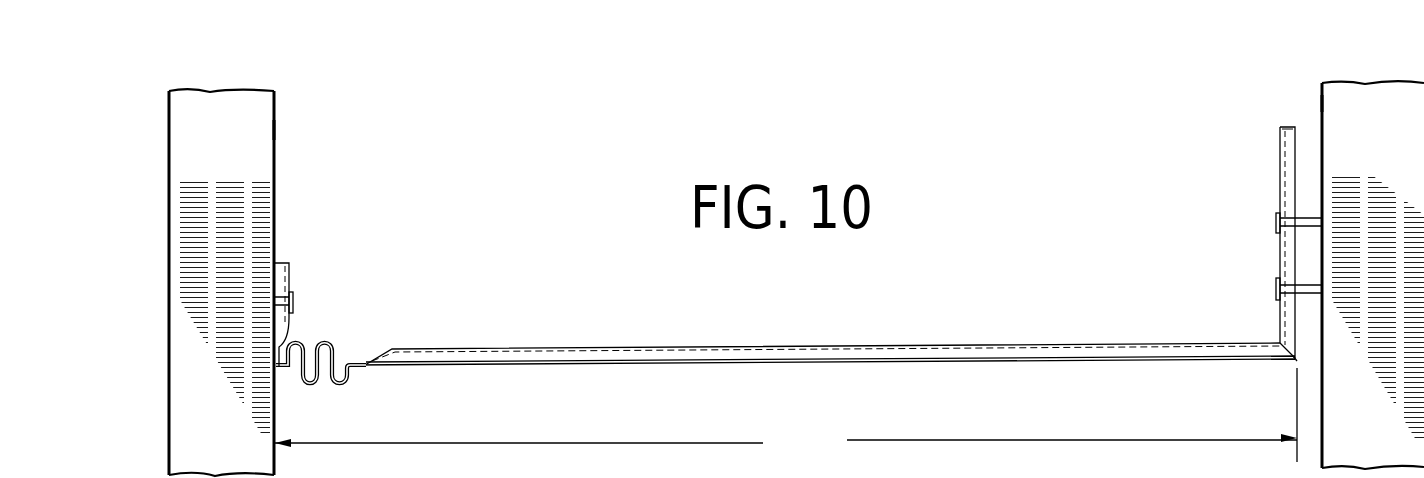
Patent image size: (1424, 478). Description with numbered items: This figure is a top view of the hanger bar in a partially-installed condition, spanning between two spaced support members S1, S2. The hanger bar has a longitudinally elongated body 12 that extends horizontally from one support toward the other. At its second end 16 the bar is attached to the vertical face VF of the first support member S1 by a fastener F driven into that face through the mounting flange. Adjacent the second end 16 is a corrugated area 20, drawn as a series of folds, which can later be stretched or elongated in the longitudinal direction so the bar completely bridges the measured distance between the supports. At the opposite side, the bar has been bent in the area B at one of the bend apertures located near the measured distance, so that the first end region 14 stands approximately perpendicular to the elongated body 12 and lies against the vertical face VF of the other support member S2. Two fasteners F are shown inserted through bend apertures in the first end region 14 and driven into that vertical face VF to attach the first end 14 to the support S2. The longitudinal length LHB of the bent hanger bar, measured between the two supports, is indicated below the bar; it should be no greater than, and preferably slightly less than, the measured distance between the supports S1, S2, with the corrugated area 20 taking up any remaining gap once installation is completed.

The longitudinally elongated body 12 is at (783, 330).
The first end region 14 is at (1255, 186).
The second end 16 is at (328, 275).
The corrugated area 20 is at (343, 335).
The support member S1 is at (213, 90).
The support member S2 is at (1357, 82).
The vertical face VF is at (274, 132).
The fastener F is at (295, 302).
The bend area B is at (1296, 362).
The longitudinal length of the hanger bar LHB is at (786, 417).